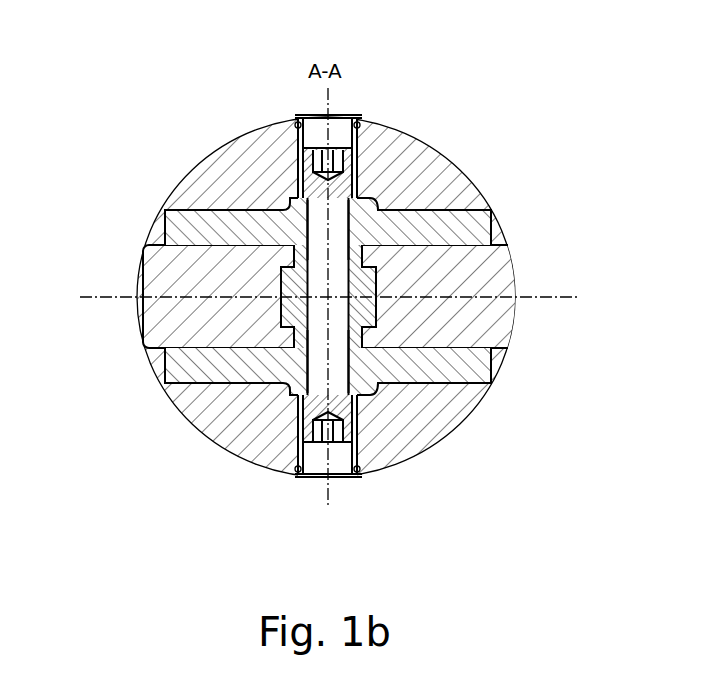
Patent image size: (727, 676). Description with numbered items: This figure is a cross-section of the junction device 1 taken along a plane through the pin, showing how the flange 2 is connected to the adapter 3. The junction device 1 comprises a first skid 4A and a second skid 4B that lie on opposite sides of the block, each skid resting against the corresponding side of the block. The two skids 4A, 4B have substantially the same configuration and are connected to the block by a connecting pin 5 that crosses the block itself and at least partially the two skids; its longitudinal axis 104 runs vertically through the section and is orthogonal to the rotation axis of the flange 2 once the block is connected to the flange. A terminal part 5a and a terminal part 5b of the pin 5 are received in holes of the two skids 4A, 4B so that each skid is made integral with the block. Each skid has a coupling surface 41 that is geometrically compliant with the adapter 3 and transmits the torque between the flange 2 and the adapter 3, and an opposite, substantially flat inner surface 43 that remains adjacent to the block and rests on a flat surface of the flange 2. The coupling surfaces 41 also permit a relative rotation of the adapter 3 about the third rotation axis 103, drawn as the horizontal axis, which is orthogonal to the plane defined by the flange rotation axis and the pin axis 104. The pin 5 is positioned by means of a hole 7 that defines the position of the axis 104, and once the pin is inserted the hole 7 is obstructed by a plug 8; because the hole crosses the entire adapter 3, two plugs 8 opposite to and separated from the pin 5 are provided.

The junction device 1 is at (366, 276).
The flange 2 is at (481, 273).
The adapter 3 is at (432, 163).
The first skid 4A is at (469, 228).
The second skid 4B is at (468, 372).
The coupling surface 41 is at (468, 205).
The inner surface 43 is at (186, 250).
The connecting pin 5 is at (318, 283).
The terminal part of the pin 5a is at (325, 245).
The terminal part of the pin 5b is at (337, 356).
The hole 7 is at (349, 114).
The plug 8 is at (347, 183).
The third rotation axis 103 is at (98, 295).
The longitudinal axis of the pin 104 is at (322, 371).